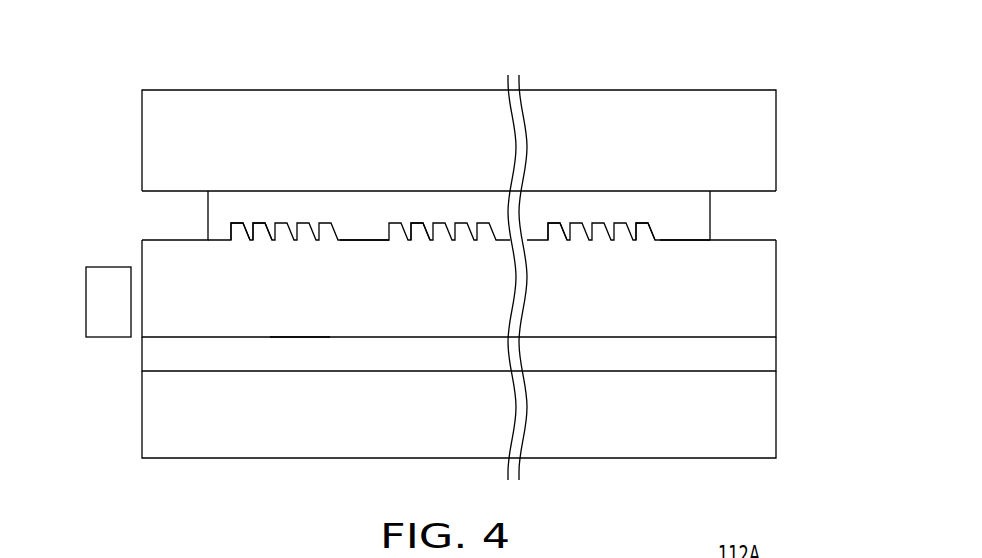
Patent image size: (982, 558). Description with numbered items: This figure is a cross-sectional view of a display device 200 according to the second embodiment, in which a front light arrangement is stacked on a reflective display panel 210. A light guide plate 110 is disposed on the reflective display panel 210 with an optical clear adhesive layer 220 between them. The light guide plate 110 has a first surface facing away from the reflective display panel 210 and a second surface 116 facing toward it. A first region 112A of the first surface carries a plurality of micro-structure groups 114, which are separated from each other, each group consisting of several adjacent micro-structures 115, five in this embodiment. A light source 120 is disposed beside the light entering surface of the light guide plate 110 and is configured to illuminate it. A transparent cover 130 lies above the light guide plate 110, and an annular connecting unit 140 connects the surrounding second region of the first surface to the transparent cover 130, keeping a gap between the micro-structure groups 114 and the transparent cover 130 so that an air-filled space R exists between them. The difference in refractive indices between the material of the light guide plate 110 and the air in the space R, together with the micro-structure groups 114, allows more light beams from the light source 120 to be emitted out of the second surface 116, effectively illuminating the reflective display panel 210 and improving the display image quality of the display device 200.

The transparent cover 130 is at (762, 137).
The annular connecting unit 140 is at (162, 208).
The light source 120 is at (109, 287).
The light guide plate 110 is at (762, 293).
The optical clear adhesive layer 220 is at (762, 357).
The reflective display panel 210 is at (762, 422).
The second surface 116 is at (303, 350).
The micro-structures 115 is at (642, 222).
The micro-structure groups 114 is at (399, 231).
The first region 112A is at (363, 228).
The space R is at (682, 213).
The display device 200 is at (811, 503).